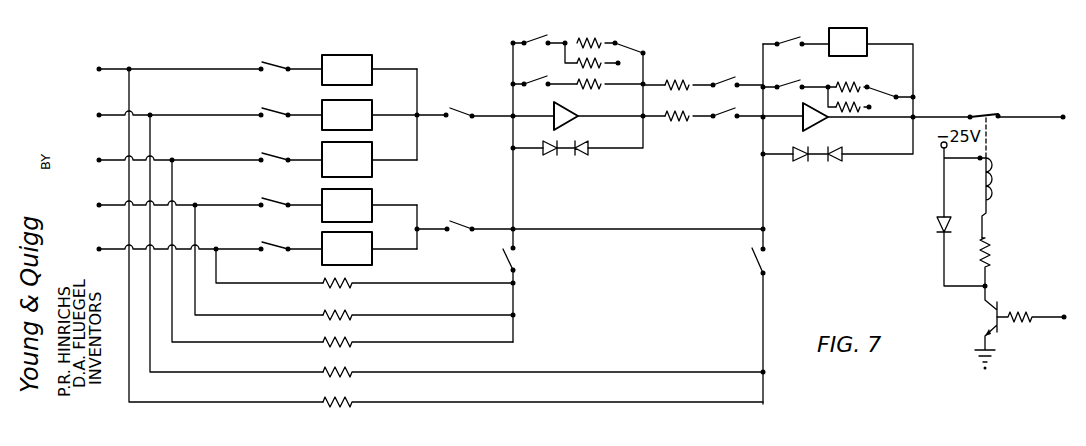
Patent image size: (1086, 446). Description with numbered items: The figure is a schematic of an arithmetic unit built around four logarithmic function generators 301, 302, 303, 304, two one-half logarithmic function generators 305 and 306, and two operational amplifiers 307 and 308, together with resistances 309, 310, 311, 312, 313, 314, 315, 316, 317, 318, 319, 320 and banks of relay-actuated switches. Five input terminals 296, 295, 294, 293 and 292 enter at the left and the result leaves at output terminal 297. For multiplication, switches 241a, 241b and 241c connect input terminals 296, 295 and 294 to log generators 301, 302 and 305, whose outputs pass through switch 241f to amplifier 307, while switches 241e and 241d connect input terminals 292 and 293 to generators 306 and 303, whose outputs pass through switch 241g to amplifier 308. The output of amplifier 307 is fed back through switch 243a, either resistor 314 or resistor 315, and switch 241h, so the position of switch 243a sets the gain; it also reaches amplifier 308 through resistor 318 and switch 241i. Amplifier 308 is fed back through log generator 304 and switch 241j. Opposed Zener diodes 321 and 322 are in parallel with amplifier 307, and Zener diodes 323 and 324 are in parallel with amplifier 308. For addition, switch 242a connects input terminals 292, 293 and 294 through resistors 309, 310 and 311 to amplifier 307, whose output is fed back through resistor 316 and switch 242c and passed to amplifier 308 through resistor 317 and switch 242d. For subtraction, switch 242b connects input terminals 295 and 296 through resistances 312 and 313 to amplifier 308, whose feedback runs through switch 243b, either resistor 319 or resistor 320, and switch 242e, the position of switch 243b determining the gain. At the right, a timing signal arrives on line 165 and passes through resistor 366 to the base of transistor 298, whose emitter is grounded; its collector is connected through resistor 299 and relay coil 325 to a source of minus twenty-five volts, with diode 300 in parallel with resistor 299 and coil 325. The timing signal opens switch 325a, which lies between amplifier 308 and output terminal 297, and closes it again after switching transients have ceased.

The input terminal 292 is at (99, 248).
The input terminal 293 is at (114, 178).
The input terminal 294 is at (99, 158).
The input terminal 295 is at (99, 114).
The input terminal 296 is at (99, 67).
The output terminal 297 is at (1058, 117).
The transistor 298 is at (990, 319).
The resistor 299 is at (993, 242).
The diode 300 is at (933, 226).
The logarithmic function generator 301 is at (366, 57).
The logarithmic function generator 302 is at (366, 104).
The logarithmic function generator 303 is at (367, 192).
The logarithmic function generator 304 is at (866, 28).
The 1/2 logarithmic function generator 305 is at (367, 147).
The 1/2 logarithmic function generator 306 is at (394, 236).
The operational amplifier 307 is at (574, 126).
The operational amplifier 308 is at (811, 130).
The resistor 309 is at (356, 284).
The resistor 310 is at (356, 315).
The resistor 311 is at (356, 344).
The resistance 312 is at (356, 372).
The resistance 313 is at (324, 398).
The resistor 314 is at (596, 38).
The resistor 315 is at (598, 63).
The resistor 316 is at (596, 88).
The resistor 317 is at (687, 74).
The resistor 318 is at (684, 126).
The resistor 319 is at (857, 78).
The resistor 320 is at (855, 114).
The Zener diode 321 is at (548, 157).
The Zener diode 322 is at (588, 156).
The Zener diode 323 is at (790, 164).
The Zener diode 324 is at (839, 160).
The relay coil 325 is at (994, 194).
The switch 325a is at (975, 113).
The resistor 366 is at (1009, 314).
The line 165 is at (1053, 320).
The switch 241a is at (286, 44).
The switch 241b is at (286, 94).
The switch 241c is at (286, 140).
The switch 241d is at (286, 184).
The switch 241e is at (286, 228).
The switch 241f is at (455, 114).
The switch 241g is at (496, 208).
The switch 241h is at (525, 36).
The switch 241i is at (739, 126).
The switch 241j is at (783, 42).
The switch 242a is at (505, 261).
The switch 242b is at (753, 273).
The switch 242c is at (522, 77).
The switch 242d is at (742, 64).
The switch 242e is at (812, 73).
The switch 243a is at (631, 46).
The switch 243b is at (882, 84).